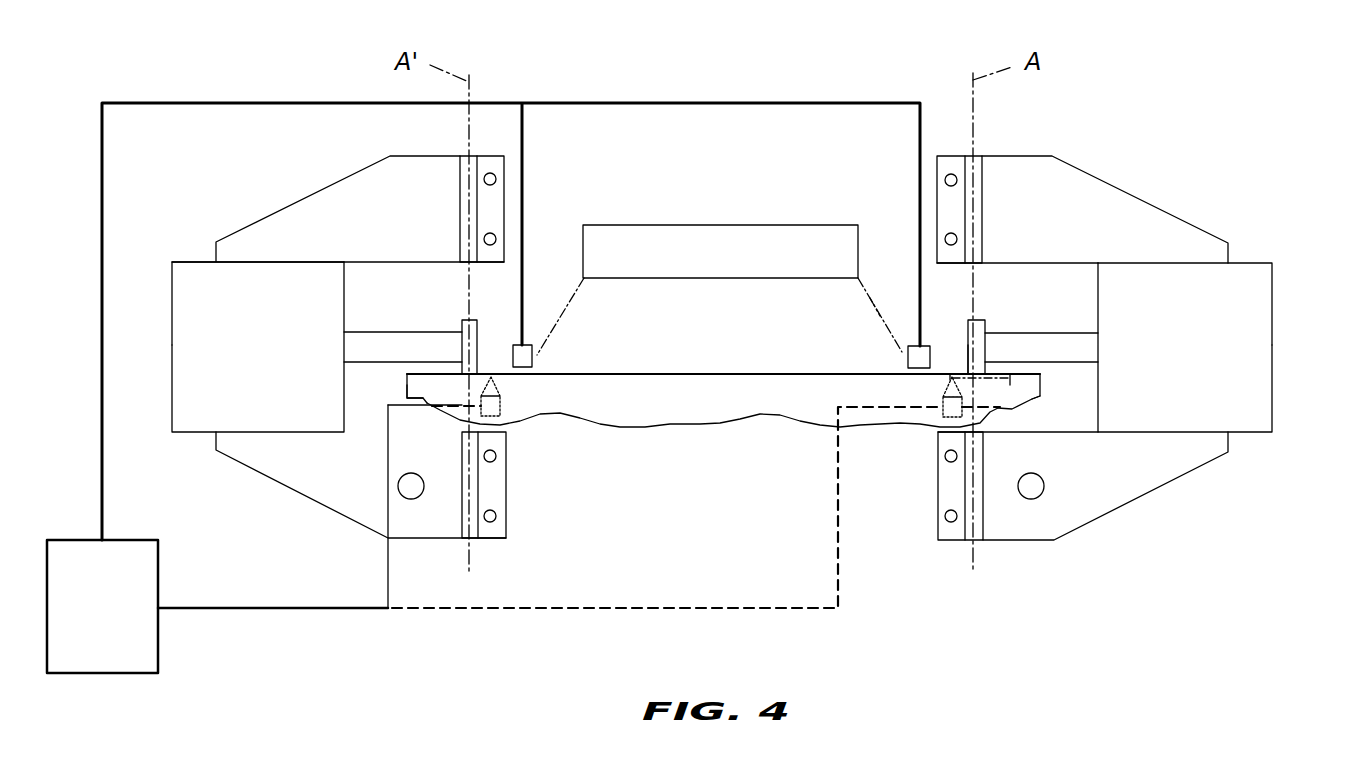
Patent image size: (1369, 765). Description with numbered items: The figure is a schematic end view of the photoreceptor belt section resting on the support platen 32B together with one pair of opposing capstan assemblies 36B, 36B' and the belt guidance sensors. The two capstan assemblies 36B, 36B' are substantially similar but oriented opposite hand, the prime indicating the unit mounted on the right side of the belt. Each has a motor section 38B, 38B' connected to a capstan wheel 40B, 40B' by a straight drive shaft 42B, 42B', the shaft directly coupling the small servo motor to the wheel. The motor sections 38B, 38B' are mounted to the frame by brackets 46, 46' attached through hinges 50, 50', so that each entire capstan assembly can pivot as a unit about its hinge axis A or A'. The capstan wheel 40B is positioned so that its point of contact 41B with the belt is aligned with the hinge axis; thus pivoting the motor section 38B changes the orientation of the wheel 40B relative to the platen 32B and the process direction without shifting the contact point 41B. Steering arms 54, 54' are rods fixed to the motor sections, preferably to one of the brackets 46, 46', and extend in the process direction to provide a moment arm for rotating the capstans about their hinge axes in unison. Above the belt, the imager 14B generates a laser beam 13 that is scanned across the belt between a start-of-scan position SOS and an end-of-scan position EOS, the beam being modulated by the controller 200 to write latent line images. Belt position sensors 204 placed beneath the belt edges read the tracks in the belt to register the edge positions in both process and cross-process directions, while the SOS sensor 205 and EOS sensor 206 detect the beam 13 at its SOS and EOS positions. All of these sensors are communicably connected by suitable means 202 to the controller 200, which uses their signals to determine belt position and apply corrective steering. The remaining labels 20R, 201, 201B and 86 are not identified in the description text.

The suitable means 202 is at (265, 102).
The controller 200 is at (125, 620).
The motor section 38B' is at (248, 274).
The capstan assembly 36B' is at (258, 347).
The bracket 46' is at (339, 347).
The hinge 50' is at (526, 347).
The steering arm 54' is at (420, 506).
The drive shaft 42B' is at (403, 347).
The capstan wheel 40B' is at (424, 328).
The support platen 32B is at (491, 377).
The print region 20R is at (405, 388).
The right platen edge 201 is at (1040, 378).
The print medium 201B is at (707, 385).
The edge 86 is at (442, 382).
The belt position sensor 204 is at (503, 408).
The imager 14B is at (720, 251).
The end of scan position EOS is at (563, 318).
The laser beam 13 is at (874, 303).
The start of scan position SOS is at (880, 318).
The EOS sensor 206 is at (532, 352).
The SOS sensor 205 is at (908, 355).
The motor section 38B is at (1230, 304).
The capstan assembly 36B is at (1230, 347).
The bracket 46 is at (1082, 345).
The hinge 50 is at (920, 348).
The steering arm 54 is at (1017, 536).
The drive shaft 42B is at (1041, 353).
The capstan wheel 40B is at (1012, 332).
The point of contact 41B is at (968, 345).